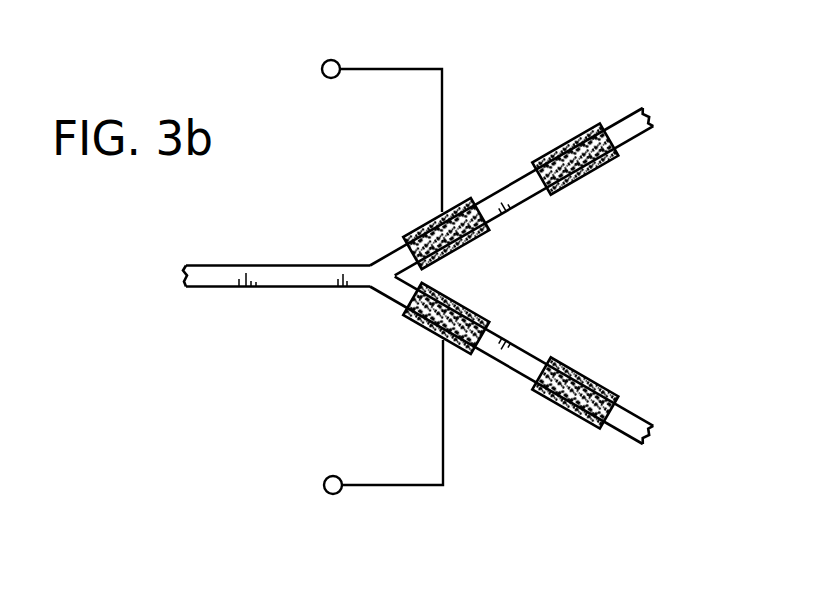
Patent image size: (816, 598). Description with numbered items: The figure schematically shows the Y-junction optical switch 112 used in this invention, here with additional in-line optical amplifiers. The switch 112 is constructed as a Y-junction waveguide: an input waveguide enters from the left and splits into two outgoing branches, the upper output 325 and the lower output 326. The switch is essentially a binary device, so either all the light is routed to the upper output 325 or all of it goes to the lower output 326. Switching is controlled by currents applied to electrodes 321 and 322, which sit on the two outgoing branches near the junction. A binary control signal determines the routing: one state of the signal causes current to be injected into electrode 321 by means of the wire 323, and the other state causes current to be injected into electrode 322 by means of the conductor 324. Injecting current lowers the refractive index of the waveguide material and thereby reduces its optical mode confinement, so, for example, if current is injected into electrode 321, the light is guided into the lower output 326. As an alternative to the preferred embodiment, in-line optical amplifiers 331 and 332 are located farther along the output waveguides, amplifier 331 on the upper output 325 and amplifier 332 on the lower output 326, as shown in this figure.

The Y-junction optical switch 112 is at (657, 276).
The electrode 321 is at (460, 247).
The electrode 322 is at (460, 301).
The wire 323 is at (398, 68).
The conductor 324 is at (400, 487).
The upper output 325 is at (623, 124).
The lower output 326 is at (627, 428).
The in-line optical amplifier 331 is at (590, 178).
The in-line optical amplifier 332 is at (580, 377).